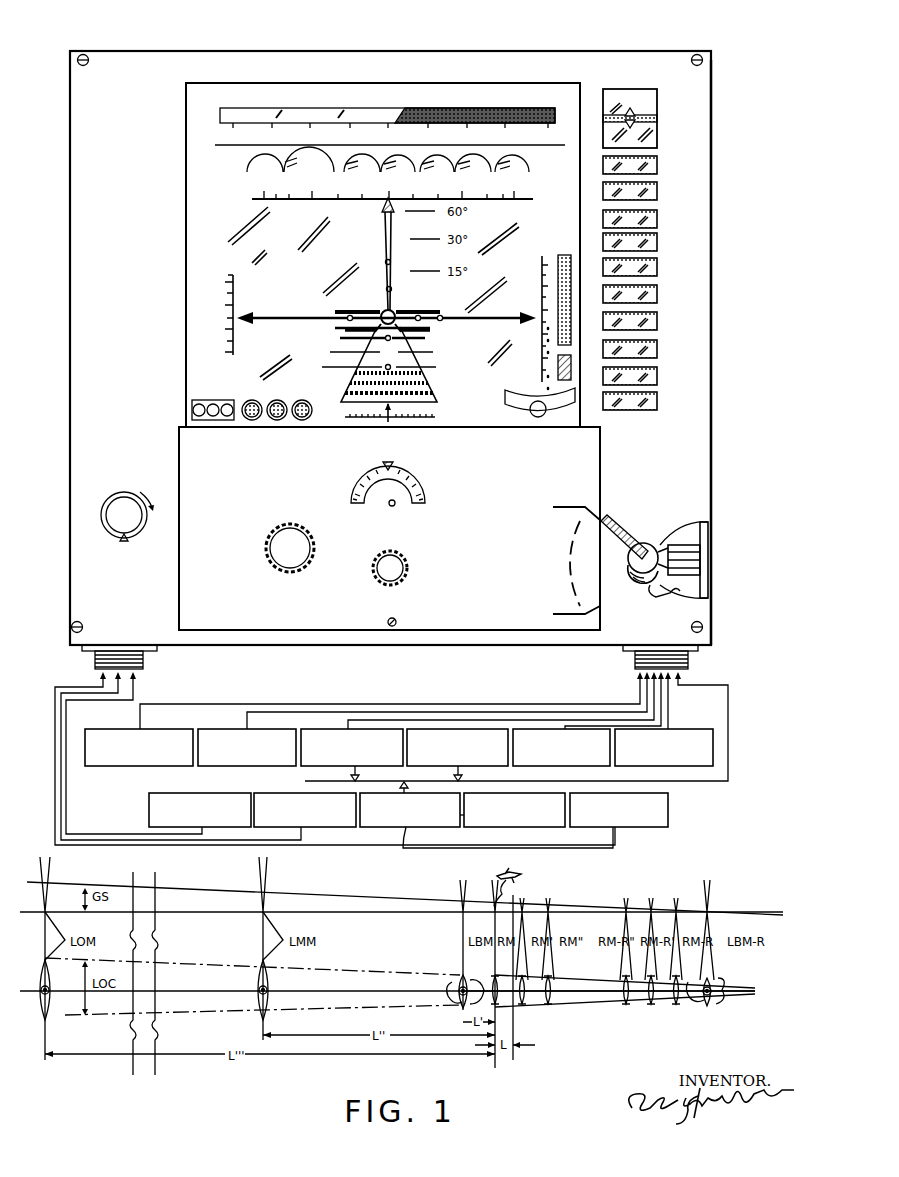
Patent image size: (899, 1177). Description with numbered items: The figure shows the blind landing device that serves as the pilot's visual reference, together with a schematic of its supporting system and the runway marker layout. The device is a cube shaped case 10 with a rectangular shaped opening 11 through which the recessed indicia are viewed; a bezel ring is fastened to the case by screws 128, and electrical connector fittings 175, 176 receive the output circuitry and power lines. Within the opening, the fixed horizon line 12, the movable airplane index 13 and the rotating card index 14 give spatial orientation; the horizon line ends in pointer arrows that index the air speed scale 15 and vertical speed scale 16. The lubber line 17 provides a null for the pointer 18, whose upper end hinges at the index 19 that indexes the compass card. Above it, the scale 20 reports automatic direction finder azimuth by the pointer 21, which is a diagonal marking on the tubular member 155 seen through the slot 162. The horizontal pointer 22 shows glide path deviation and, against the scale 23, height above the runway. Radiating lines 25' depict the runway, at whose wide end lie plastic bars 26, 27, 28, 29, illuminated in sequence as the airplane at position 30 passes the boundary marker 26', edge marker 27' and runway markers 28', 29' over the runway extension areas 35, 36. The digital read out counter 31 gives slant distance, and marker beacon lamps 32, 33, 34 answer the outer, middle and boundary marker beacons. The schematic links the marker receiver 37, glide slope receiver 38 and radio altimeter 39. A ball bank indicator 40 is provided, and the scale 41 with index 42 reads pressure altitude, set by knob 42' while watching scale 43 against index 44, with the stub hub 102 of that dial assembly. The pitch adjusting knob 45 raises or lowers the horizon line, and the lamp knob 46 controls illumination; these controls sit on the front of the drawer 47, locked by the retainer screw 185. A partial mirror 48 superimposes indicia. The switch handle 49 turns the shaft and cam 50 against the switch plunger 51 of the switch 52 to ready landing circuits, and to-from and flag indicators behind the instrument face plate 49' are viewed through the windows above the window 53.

The case 10 is at (711, 223).
The rectangular shaped opening 11 is at (582, 232).
The fixed horizon line 12 is at (513, 316).
The movable airplane index 13 is at (405, 310).
The rotating card index 14 is at (500, 201).
The air speed scale 15 is at (233, 286).
The vertical speed scale 16 is at (543, 273).
The lubber line 17 is at (391, 262).
The pointer 18 is at (385, 250).
The index 19 is at (384, 208).
The scale 20 is at (248, 147).
The pointer 21 is at (396, 111).
The horizontal pointer 22 is at (440, 340).
The scale 23 is at (308, 346).
The radiating lines 25' is at (409, 417).
The plastic bar 26 is at (408, 368).
The plastic bar 27 is at (413, 387).
The plastic bar 28 is at (378, 383).
The plastic bar 29 is at (415, 373).
The airplane position 30 is at (508, 881).
The digital read out counter 31 is at (214, 397).
The marker beacon lamp 32 is at (258, 397).
The marker beacon lamp 33 is at (284, 397).
The marker beacon lamp 34 is at (310, 397).
The runway extension area 35 is at (463, 905).
The runway extension area 36 is at (708, 908).
The marker receiver 37 is at (408, 848).
The glide slope receiver 38 is at (330, 768).
The radio altimeter 39 is at (472, 729).
The ball bank indicator 40 is at (538, 402).
The scale 41 is at (432, 413).
The index 42 is at (399, 426).
The setting knob 42' is at (404, 576).
The scale 43 is at (412, 499).
The index 44 is at (394, 466).
The pitch adjusting knob 45 is at (289, 533).
The lamp knob 46 is at (111, 537).
The drawer 47 is at (180, 593).
The partial mirror 48 is at (200, 243).
The switch handle 49 is at (580, 560).
The instrument face plate 49' is at (721, 352).
The shaft and cam 50 is at (665, 594).
The switch plunger 51 is at (674, 539).
The switch 52 is at (664, 536).
The window 53 is at (631, 410).
The stub hub 102 is at (395, 508).
The screws 128 is at (85, 54).
The tubular member 155 is at (284, 112).
The slot 162 is at (341, 113).
The electrical connector fitting 175 is at (142, 660).
The electrical connector fitting 176 is at (635, 660).
The retainer screw 185 is at (396, 620).
The boundary marker 26' is at (441, 1018).
The edge marker 27' is at (519, 1021).
The runway marker 28' is at (546, 1021).
The runway marker 29' is at (576, 1022).